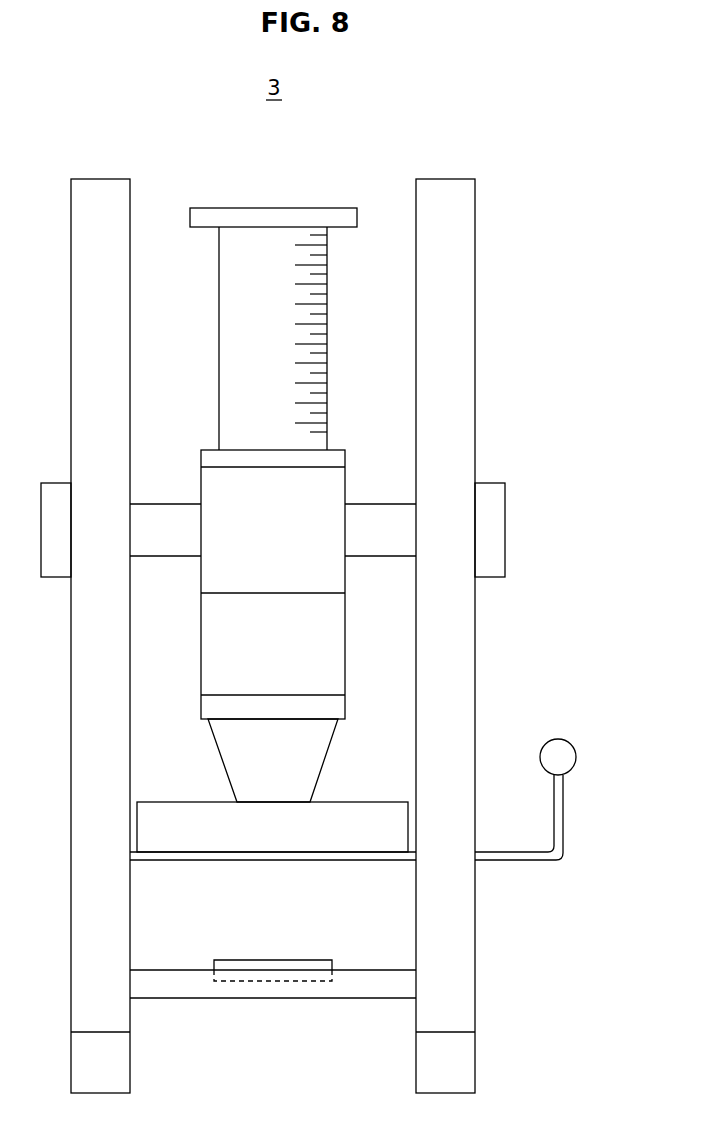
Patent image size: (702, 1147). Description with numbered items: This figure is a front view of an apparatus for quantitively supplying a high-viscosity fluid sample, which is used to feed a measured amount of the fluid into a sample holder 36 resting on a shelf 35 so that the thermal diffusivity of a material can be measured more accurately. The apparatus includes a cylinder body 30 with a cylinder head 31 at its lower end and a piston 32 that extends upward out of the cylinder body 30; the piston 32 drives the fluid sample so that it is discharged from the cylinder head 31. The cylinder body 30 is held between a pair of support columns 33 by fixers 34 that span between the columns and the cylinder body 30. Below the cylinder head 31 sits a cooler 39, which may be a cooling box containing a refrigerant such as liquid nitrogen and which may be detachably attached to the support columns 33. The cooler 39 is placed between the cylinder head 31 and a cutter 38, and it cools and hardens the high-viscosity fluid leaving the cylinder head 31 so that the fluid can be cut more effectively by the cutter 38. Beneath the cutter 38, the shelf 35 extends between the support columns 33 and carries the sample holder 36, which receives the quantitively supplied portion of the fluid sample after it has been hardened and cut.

The cylinder body 30 is at (330, 570).
The cylinder head 31 is at (289, 749).
The piston 32 is at (238, 354).
The support columns 33 is at (425, 202).
The fixers 34 is at (390, 517).
The shelf 35 is at (349, 988).
The sample holder 36 is at (228, 964).
The cutter 38 is at (343, 858).
The cooler 39 is at (385, 830).